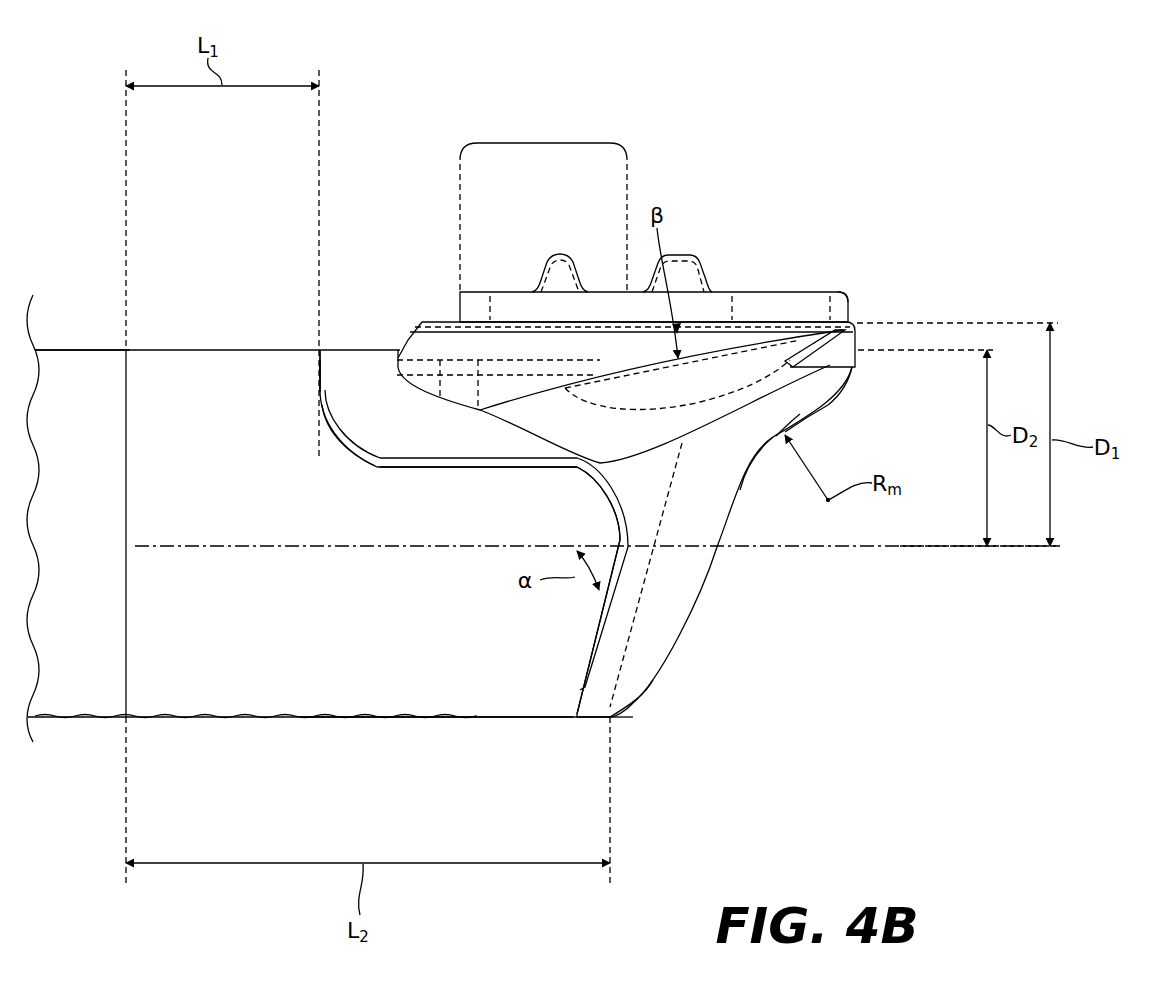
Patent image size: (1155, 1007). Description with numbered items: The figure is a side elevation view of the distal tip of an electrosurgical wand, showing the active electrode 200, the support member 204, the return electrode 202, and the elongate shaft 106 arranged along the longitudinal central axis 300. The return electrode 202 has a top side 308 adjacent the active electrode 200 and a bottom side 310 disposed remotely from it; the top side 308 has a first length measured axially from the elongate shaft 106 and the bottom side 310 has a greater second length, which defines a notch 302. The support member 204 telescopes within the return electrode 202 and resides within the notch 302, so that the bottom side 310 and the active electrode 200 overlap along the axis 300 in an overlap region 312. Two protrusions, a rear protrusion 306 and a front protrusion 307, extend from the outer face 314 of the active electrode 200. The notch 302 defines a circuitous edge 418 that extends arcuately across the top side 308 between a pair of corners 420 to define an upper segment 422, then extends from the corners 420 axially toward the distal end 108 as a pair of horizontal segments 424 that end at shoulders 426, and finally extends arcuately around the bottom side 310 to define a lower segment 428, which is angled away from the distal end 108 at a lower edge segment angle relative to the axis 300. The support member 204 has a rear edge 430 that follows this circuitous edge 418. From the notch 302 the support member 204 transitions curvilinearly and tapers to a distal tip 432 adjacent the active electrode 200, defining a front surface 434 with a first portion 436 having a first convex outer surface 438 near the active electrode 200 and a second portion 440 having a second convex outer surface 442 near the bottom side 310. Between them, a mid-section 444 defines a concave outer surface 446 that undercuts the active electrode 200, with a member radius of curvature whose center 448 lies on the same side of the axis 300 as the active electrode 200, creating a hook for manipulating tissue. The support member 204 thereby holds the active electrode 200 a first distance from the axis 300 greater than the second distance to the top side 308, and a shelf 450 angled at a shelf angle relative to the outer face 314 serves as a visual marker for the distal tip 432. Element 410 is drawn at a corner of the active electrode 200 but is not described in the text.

The elongate shaft 106 is at (90, 346).
The distal end 108 is at (856, 350).
The active electrode 200 is at (810, 288).
The return electrode 202 is at (275, 616).
The support member 204 is at (381, 345).
The longitudinal central axis 300 is at (950, 548).
The notch 302 is at (410, 456).
The rear protrusion 306 is at (560, 255).
The front protrusion 307 is at (690, 256).
The top side 308 is at (245, 348).
The bottom side 310 is at (481, 720).
The overlap region 312 is at (533, 142).
The outer face 314 is at (772, 291).
The plate corner 410 is at (850, 297).
The circuitous edge 418 is at (326, 364).
The corners 420 is at (345, 455).
The upper segment 422 is at (317, 387).
The horizontal segments 424 is at (497, 469).
The shoulders 426 is at (606, 489).
The lower segment 428 is at (593, 634).
The rear edge 430 is at (577, 719).
The distal tip 432 is at (852, 368).
The front surface 434 is at (708, 570).
The first portion 436 is at (846, 396).
The first convex outer surface 438 is at (786, 421).
The second portion 440 is at (644, 703).
The second convex outer surface 442 is at (633, 718).
The mid-section 444 is at (765, 459).
The concave outer surface 446 is at (791, 428).
The center 448 is at (828, 500).
The shelf 450 is at (664, 393).